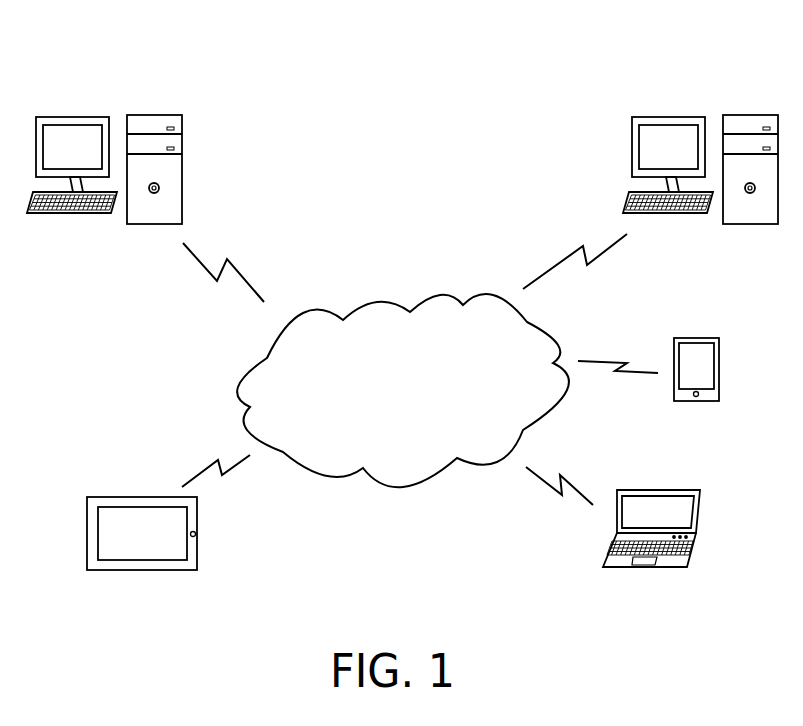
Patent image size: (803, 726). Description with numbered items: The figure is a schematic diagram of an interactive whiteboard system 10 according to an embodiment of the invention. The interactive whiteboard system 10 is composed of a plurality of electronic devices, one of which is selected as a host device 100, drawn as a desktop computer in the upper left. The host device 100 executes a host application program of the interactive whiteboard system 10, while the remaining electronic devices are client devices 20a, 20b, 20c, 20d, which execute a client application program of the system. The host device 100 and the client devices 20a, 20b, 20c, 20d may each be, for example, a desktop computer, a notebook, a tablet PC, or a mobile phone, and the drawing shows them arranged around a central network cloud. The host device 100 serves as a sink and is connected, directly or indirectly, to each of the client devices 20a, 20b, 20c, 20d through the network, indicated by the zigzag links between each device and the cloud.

The interactive whiteboard system 10 is at (771, 645).
The host device 100 is at (117, 115).
The client device 20a is at (712, 115).
The client device 20b is at (722, 362).
The client device 20c is at (703, 521).
The client device 20d is at (203, 537).